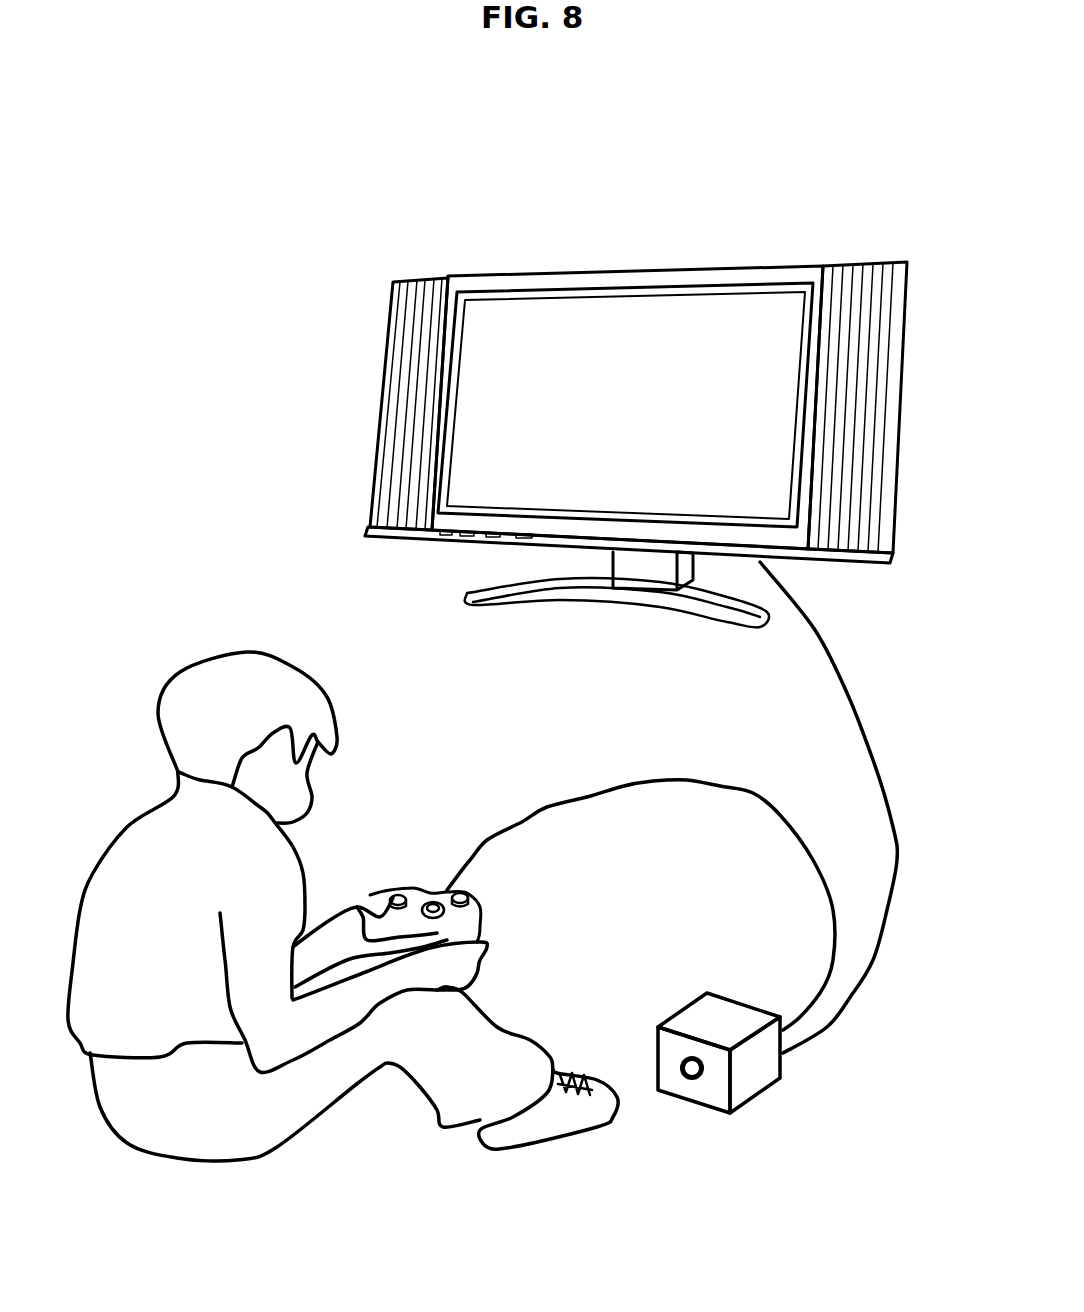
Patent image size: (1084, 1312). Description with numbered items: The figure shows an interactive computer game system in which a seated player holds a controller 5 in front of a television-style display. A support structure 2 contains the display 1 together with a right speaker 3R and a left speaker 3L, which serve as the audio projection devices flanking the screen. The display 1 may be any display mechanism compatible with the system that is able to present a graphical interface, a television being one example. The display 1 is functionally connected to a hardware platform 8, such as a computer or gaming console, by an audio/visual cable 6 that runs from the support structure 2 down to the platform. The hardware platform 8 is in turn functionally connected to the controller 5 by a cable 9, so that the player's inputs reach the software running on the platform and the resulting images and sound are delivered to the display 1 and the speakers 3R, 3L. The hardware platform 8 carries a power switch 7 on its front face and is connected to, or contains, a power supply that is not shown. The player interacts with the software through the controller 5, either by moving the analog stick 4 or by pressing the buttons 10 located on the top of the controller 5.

The display 1 is at (593, 320).
The support structure 2 is at (767, 265).
The left speaker 3L is at (413, 300).
The right speaker 3R is at (863, 293).
The analog stick 4 is at (393, 890).
The controller 5 is at (480, 851).
The audio/visual cable 6 is at (843, 673).
The power switch 7 is at (687, 1068).
The hardware platform 8 is at (726, 1068).
The cable 9 is at (540, 806).
The buttons 10 is at (427, 890).